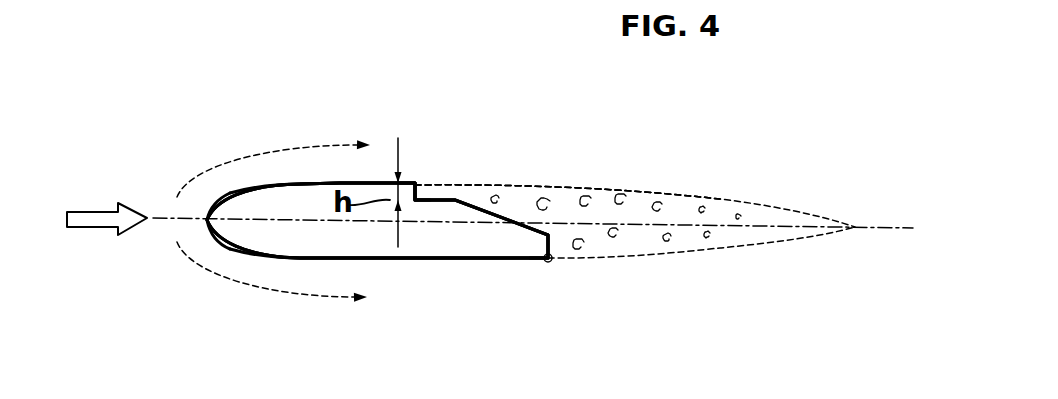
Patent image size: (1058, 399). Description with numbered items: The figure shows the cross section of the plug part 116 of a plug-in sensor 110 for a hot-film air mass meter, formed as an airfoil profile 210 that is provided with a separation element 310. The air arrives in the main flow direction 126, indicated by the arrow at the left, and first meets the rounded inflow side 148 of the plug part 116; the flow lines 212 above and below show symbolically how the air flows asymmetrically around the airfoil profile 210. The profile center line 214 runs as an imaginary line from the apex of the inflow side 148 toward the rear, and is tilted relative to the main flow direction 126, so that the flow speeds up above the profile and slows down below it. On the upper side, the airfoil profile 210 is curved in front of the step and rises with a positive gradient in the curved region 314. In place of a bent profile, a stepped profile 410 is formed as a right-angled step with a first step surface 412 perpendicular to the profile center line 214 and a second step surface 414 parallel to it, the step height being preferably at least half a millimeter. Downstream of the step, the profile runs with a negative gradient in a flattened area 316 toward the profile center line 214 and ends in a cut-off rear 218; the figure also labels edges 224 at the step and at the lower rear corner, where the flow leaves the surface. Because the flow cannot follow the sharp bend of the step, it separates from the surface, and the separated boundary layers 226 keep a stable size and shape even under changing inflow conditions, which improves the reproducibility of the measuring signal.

The plug-in sensor 110 is at (370, 182).
The plug part 116 is at (377, 220).
The airfoil profile 210 is at (380, 183).
The main flow direction 126 is at (95, 217).
The inflow side 148 is at (202, 213).
The flow lines 212 is at (243, 158).
The profile center line 214 is at (430, 223).
The rear 218 is at (553, 262).
The separation edge 224 is at (437, 170).
The separated boundary layers 226 is at (722, 198).
The separation element 310 is at (567, 126).
The stepped profile 410 is at (447, 186).
The curved region 314 is at (302, 178).
The flattened area 316 is at (508, 210).
The first step surface 412 is at (453, 188).
The second step surface 414 is at (468, 180).